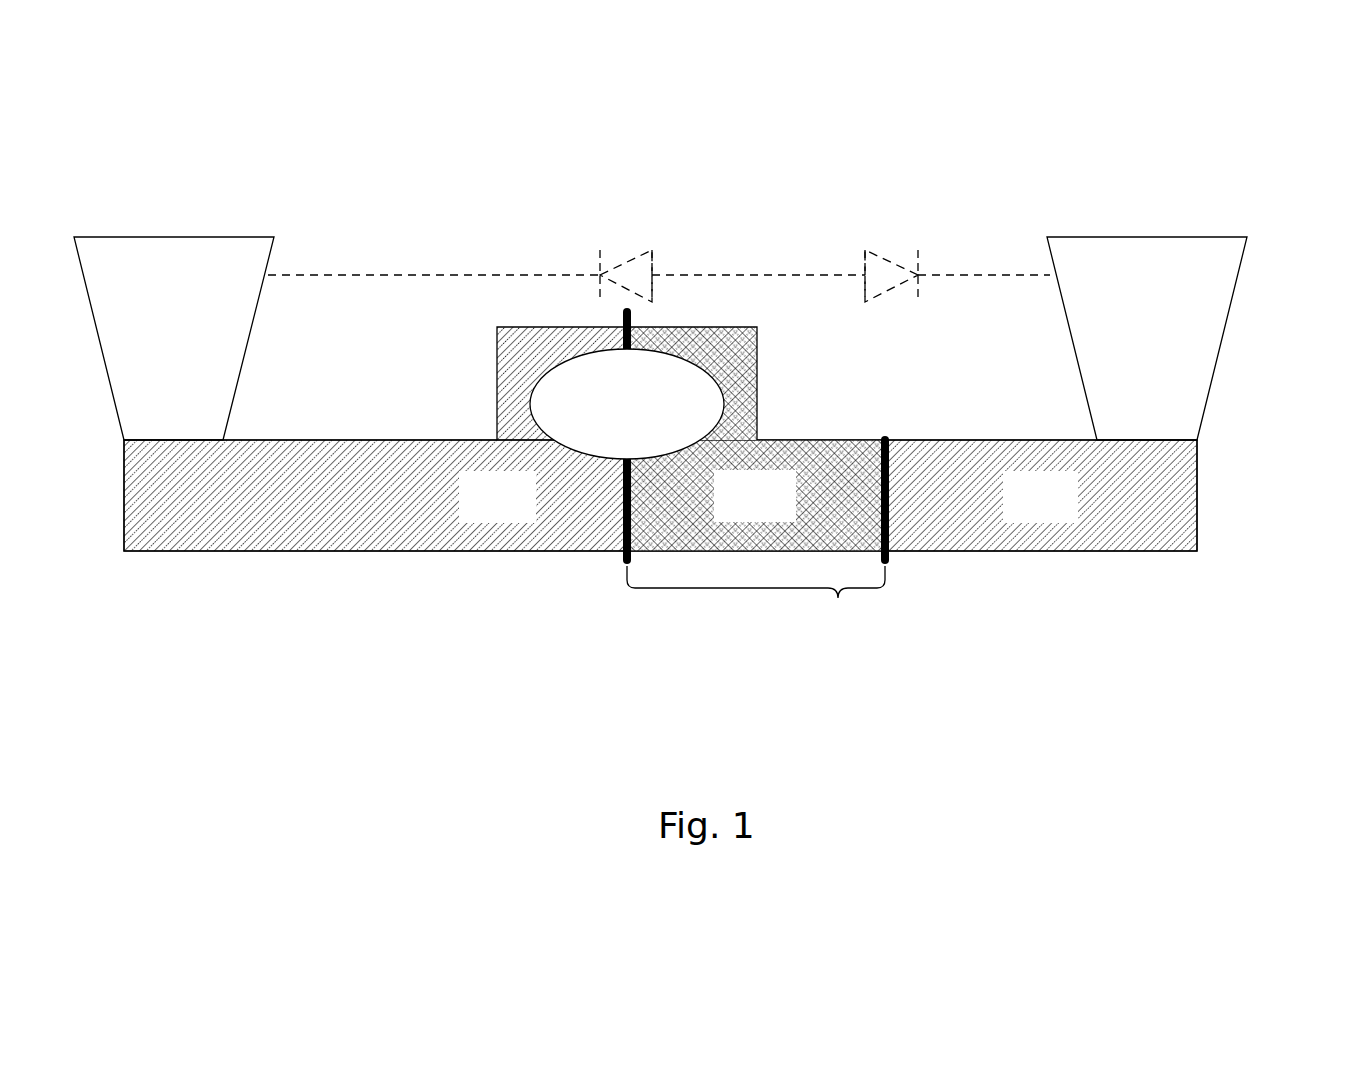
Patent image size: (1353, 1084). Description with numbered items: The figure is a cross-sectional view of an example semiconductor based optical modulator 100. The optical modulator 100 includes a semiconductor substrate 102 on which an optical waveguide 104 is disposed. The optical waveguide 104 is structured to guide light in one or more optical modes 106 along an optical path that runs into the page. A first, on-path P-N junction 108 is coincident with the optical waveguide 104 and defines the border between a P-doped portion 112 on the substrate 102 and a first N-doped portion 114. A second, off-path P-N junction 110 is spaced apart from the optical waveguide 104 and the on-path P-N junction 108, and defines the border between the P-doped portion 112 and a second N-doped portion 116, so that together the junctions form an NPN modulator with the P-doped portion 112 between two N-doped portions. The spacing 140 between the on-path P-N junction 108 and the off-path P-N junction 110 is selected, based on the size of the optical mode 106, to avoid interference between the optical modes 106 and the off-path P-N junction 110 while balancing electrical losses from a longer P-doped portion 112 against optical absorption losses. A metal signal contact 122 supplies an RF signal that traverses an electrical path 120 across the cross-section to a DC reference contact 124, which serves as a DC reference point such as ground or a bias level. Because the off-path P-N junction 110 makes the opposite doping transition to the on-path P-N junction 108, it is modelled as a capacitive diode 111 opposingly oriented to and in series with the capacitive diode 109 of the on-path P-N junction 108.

The optical modulator 100 is at (702, 386).
The semiconductor substrate 102 is at (1228, 437).
The optical waveguide 104 is at (770, 322).
The optical mode 106 is at (613, 414).
The on-path P-N junction 108 is at (645, 314).
The capacitive diode 109 is at (650, 240).
The off-path P-N junction 110 is at (892, 424).
The capacitive diode 111 is at (890, 240).
The P-doped portion 112 is at (743, 517).
The first N-doped portion 114 is at (485, 517).
The second N-doped portion 116 is at (1028, 517).
The electrical path 120 is at (980, 252).
The signal contact 122 is at (162, 359).
The DC reference contact 124 is at (1135, 359).
The spacing 140 is at (756, 595).